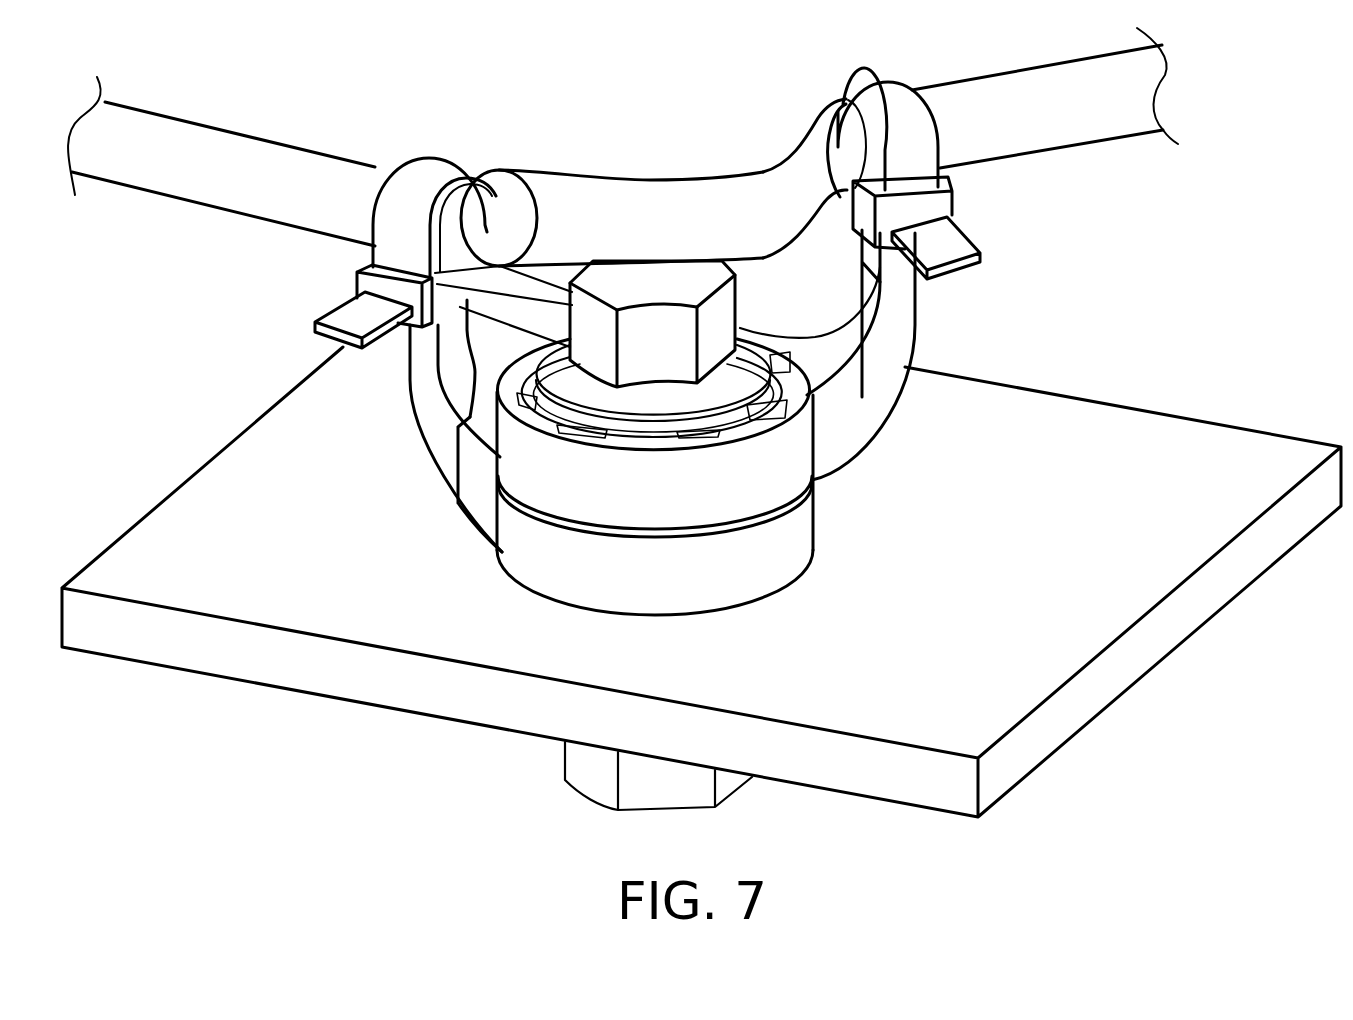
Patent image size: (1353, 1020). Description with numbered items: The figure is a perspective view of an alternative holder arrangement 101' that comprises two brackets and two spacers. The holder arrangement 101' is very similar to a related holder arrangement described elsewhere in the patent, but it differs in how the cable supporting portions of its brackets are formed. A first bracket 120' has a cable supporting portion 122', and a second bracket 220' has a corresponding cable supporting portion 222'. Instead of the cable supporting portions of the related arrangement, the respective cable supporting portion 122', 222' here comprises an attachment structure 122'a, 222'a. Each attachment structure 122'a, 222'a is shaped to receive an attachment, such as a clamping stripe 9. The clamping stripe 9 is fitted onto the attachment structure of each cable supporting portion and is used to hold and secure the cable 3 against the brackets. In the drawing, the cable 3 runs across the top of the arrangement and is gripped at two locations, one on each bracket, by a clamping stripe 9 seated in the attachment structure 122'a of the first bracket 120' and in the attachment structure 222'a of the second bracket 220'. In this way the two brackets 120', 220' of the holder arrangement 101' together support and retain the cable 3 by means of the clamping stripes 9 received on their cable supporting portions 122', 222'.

The cable 3 is at (623, 137).
The clamping stripe 9 is at (423, 193).
The holder arrangement 101' is at (701, 499).
The first bracket 120' is at (446, 477).
The cable supporting portion 122' is at (326, 426).
The attachment structure 122'a is at (612, 174).
The second bracket 220' is at (843, 349).
The cable supporting portion 222' is at (912, 355).
The attachment structure 222'a is at (788, 153).